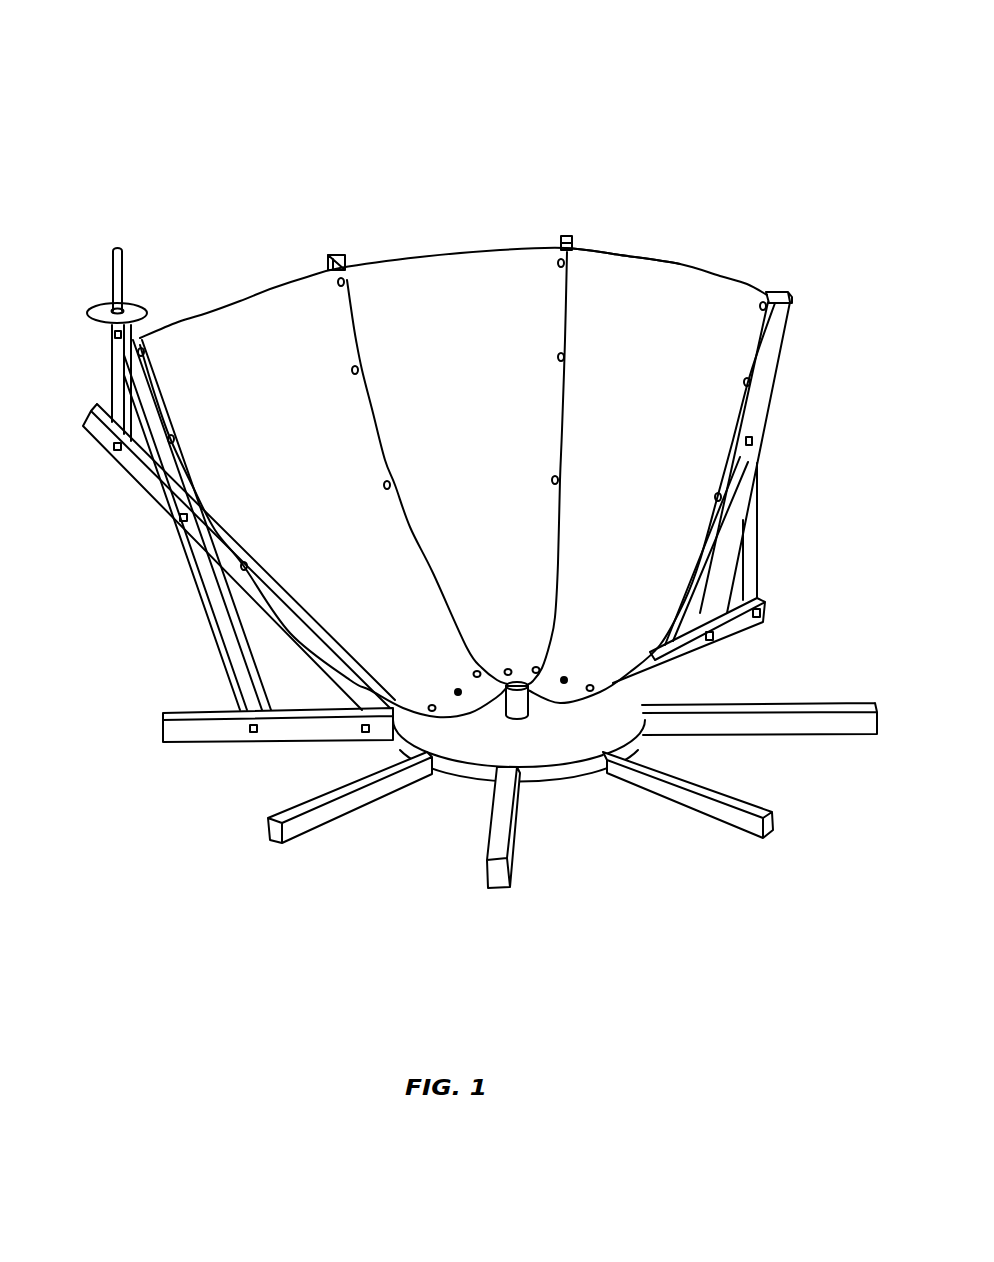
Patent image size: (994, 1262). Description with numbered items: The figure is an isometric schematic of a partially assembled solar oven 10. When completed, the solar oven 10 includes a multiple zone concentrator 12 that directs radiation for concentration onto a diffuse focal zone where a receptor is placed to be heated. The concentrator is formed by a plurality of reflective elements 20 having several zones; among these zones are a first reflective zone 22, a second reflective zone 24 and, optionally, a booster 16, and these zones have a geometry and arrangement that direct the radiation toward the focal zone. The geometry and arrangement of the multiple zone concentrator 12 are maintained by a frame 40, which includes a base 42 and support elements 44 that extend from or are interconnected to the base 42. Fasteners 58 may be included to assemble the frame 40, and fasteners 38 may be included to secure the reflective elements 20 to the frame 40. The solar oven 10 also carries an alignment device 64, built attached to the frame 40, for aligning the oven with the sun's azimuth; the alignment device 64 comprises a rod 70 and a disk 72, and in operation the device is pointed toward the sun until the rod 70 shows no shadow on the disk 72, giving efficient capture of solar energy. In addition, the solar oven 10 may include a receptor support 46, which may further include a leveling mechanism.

The solar oven 10 is at (232, 116).
The multiple zone concentrator 12 is at (447, 250).
The booster 16 is at (687, 278).
The reflective elements 20 is at (715, 437).
The first reflective zone 22 is at (800, 600).
The second reflective zone 24 is at (633, 633).
The fasteners 38 is at (393, 482).
The frame 40 is at (140, 484).
The base 42 is at (550, 773).
The support elements 44 is at (213, 600).
The receptor support 46 is at (513, 702).
The fasteners 58 is at (252, 733).
The alignment device 64 is at (112, 295).
The rod 70 is at (111, 232).
The disk 72 is at (135, 308).